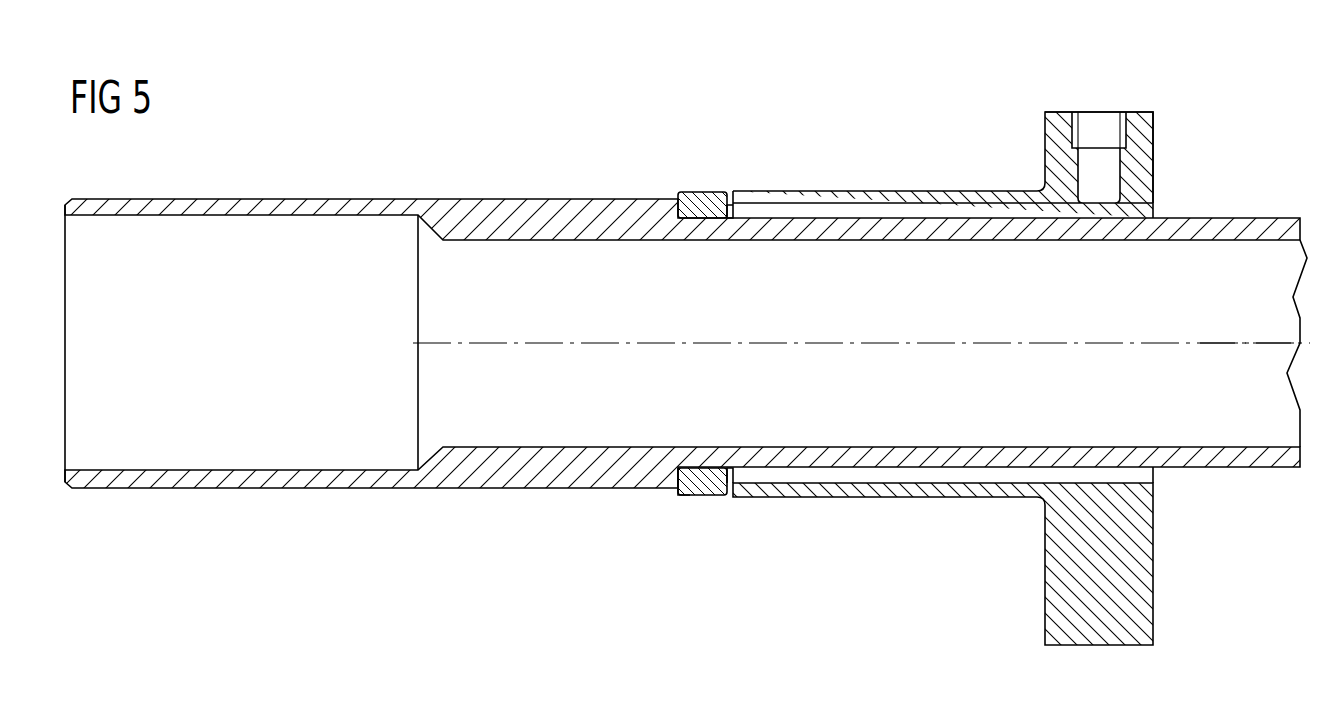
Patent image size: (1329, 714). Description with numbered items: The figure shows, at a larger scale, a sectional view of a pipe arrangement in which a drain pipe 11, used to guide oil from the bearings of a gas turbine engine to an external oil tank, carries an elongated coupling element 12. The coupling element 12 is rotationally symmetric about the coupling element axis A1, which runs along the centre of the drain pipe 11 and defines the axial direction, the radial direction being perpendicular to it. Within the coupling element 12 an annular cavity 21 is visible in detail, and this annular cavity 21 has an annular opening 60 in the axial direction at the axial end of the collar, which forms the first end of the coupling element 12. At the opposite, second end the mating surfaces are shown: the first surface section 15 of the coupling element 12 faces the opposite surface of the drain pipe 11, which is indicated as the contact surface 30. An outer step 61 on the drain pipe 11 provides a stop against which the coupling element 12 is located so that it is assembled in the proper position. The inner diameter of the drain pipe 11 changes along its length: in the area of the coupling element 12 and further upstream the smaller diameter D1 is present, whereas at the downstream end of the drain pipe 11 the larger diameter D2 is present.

The drain pipe 11 is at (555, 212).
The coupling element 12 is at (930, 493).
The first surface section 15 is at (702, 212).
The annular cavity 21 is at (892, 213).
The contact surface 30 is at (698, 216).
The annular opening 60 is at (1157, 213).
The outer step 61 is at (672, 497).
The drain pipe inner diameter D1 is at (1013, 433).
The drain pipe inner diameter D2 is at (288, 229).
The coupling element axis A1 is at (1248, 343).